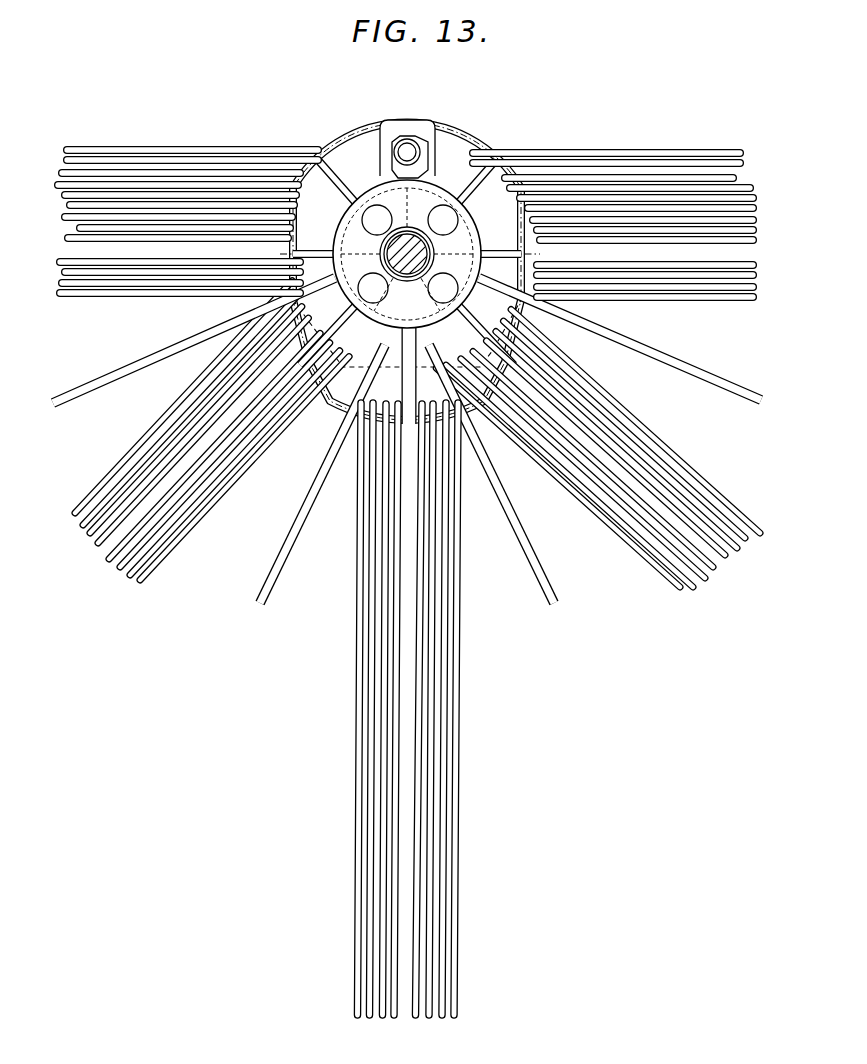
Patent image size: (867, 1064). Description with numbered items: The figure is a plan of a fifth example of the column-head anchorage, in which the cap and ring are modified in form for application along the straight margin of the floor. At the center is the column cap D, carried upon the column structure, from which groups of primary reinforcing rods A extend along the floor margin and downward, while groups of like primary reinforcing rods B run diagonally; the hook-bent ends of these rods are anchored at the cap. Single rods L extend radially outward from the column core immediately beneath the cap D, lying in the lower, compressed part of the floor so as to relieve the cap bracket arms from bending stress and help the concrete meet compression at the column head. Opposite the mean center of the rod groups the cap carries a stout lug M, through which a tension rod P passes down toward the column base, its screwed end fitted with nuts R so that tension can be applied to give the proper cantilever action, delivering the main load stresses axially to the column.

The primary reinforcing rods A is at (182, 154).
The primary reinforcing rods B is at (160, 556).
The rods L is at (152, 360).
The cap D is at (345, 233).
The nuts R is at (362, 158).
The lug M is at (407, 124).
The tension rod P is at (420, 152).